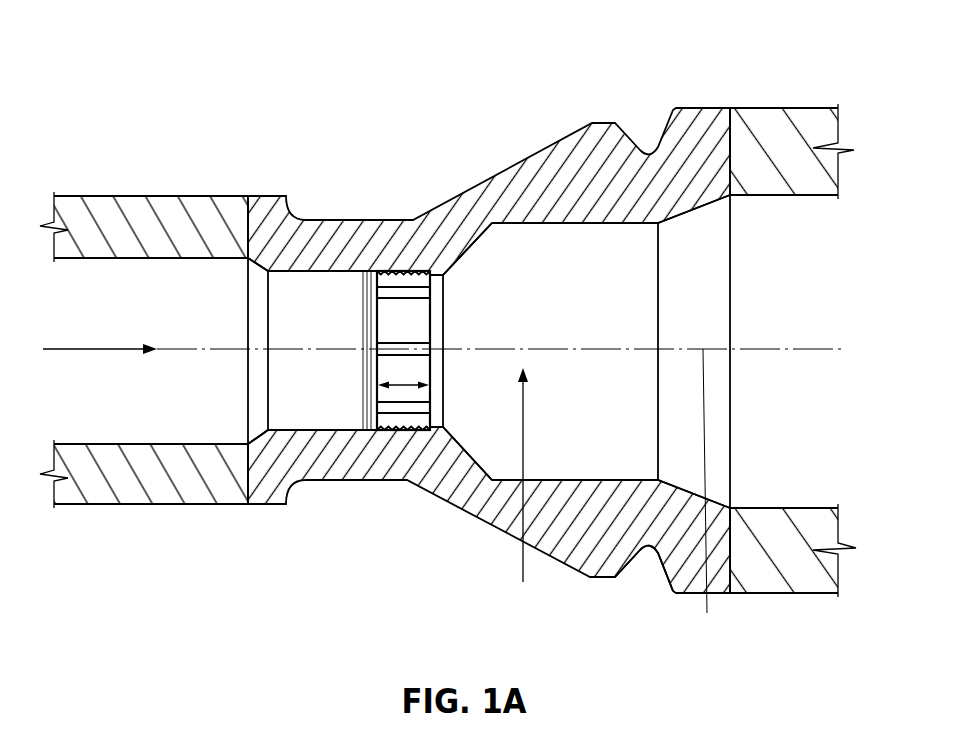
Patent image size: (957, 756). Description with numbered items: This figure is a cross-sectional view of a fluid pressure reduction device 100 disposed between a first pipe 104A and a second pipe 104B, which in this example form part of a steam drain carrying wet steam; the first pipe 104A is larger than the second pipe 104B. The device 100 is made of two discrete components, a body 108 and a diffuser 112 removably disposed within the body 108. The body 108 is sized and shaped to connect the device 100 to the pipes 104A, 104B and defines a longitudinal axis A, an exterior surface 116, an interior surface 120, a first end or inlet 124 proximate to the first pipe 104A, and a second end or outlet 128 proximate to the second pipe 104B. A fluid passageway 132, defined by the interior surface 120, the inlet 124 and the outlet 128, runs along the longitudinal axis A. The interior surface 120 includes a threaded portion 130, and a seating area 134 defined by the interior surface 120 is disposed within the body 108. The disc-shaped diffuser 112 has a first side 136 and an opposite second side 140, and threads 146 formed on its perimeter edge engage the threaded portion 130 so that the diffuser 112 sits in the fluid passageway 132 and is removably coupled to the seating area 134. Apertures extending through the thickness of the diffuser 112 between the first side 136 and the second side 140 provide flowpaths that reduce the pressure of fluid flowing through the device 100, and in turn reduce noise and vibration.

The fluid pressure reduction device 100 is at (497, 66).
The first pipe 104A is at (116, 171).
The second pipe 104B is at (790, 85).
The body 108 is at (451, 159).
The diffuser 112 is at (407, 447).
The exterior surface 116 is at (575, 577).
The interior surface 120 is at (608, 480).
The first end or inlet 124 is at (250, 313).
The second end or outlet 128 is at (730, 253).
The threaded portion 130 is at (365, 270).
The fluid passageway 132 is at (526, 486).
The seating area 134 is at (492, 222).
The first side 136 is at (364, 381).
The second side 140 is at (432, 313).
The threads 146 is at (395, 270).
The longitudinal axis A is at (707, 495).